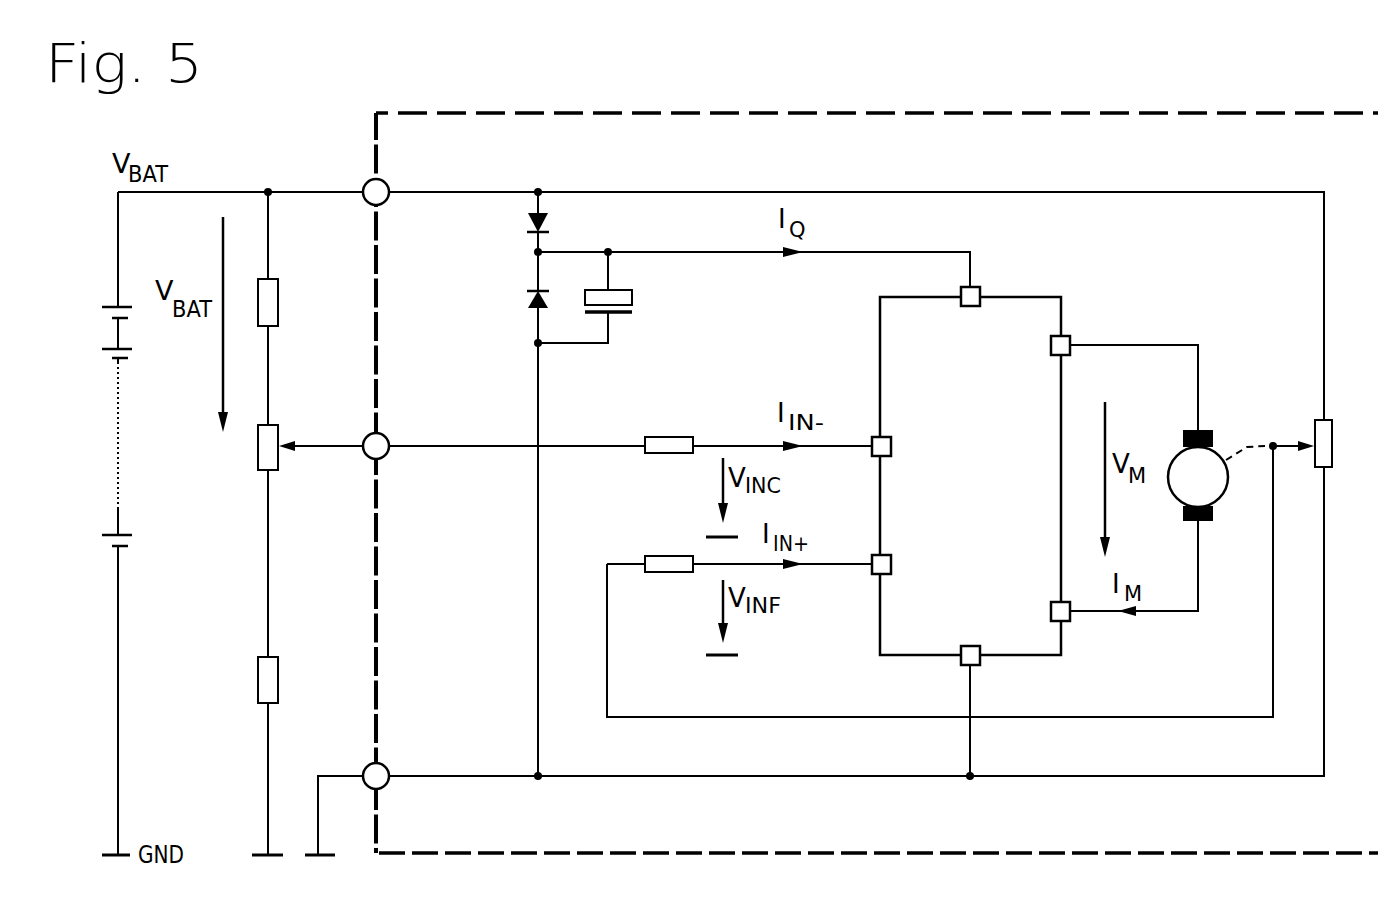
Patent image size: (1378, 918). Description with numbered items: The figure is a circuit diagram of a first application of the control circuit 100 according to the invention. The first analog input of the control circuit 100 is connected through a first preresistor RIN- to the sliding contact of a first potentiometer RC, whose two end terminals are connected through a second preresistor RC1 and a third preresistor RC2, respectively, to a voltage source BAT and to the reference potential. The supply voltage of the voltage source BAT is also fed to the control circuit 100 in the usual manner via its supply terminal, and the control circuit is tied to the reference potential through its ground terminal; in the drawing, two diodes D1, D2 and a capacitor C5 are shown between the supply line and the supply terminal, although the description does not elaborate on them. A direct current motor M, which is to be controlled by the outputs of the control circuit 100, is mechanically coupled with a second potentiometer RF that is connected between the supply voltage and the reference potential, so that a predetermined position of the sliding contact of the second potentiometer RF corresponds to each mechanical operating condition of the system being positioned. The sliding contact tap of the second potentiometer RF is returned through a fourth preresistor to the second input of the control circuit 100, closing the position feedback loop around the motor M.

The control circuit 100 is at (1033, 317).
The diode D1 is at (518, 224).
The diode D2 is at (518, 301).
The capacitor C5 is at (630, 295).
The second preresistor RC1 is at (293, 297).
The first potentiometer RC is at (311, 434).
The third preresistor RC2 is at (293, 671).
The second potentiometer RF is at (1303, 435).
The first preresistor RIN- is at (674, 423).
The voltage source BAT is at (92, 523).
The direct current motor M is at (1198, 475).